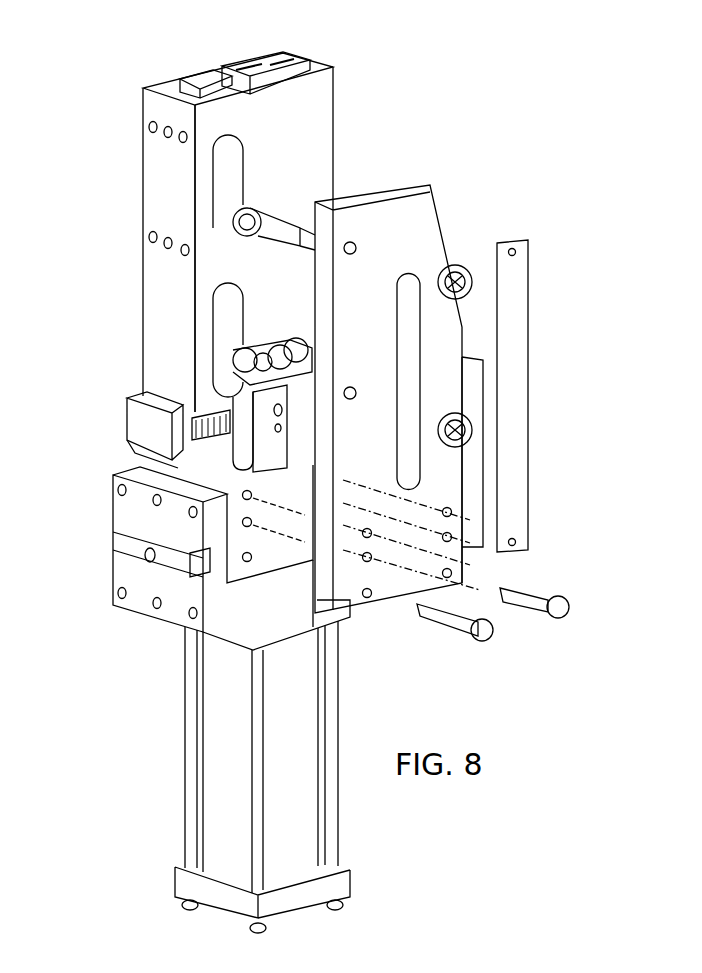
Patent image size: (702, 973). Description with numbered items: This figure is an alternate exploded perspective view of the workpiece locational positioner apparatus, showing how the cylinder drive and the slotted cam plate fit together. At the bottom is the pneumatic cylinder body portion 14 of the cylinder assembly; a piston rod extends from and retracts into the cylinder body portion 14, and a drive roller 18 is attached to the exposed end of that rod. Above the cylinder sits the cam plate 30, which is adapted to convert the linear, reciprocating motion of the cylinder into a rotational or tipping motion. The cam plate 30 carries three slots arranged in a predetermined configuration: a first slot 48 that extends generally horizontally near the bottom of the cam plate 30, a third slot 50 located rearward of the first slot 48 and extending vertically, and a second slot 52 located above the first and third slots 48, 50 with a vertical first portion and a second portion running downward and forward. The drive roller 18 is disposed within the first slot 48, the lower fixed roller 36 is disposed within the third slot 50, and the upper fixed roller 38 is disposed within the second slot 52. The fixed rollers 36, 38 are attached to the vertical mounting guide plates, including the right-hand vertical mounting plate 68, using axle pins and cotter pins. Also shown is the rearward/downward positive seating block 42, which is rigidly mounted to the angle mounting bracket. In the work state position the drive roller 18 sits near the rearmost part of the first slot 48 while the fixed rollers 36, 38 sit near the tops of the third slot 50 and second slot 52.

The cylinder body portion 14 is at (220, 699).
The drive roller 18 is at (380, 371).
The cam plate 30 is at (264, 208).
The lower fixed roller 36 is at (113, 322).
The upper fixed roller 38 is at (114, 169).
The rearward/downward positive seating block 42 is at (159, 415).
The first slot 48 is at (378, 277).
The third slot 50 is at (138, 310).
The second slot 52 is at (177, 153).
The vertical mounting plate 68 is at (502, 440).